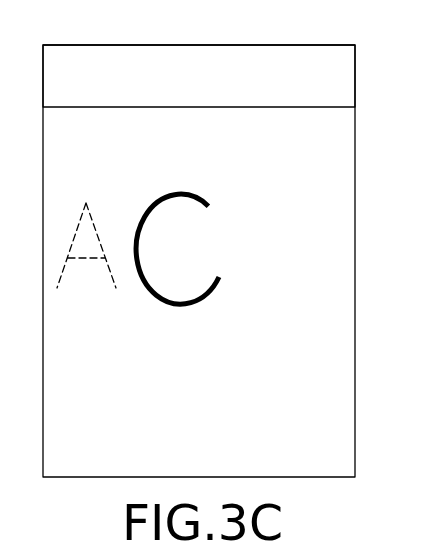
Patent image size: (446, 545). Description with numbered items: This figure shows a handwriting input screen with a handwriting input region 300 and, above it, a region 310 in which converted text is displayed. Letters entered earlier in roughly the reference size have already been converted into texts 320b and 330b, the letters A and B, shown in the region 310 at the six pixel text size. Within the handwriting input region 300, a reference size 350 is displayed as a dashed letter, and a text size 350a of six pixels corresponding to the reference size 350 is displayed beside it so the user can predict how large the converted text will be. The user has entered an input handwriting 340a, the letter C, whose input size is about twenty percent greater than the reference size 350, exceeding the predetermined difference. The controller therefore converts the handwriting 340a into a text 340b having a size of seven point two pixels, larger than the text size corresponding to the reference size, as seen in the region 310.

The handwriting input region 300 is at (343, 222).
The region 310 is at (345, 82).
The text 320b is at (58, 63).
The text 330b is at (92, 63).
The text 340b is at (142, 67).
The input handwriting 340a is at (208, 205).
The reference size 350 is at (84, 202).
The text size 350a is at (83, 310).